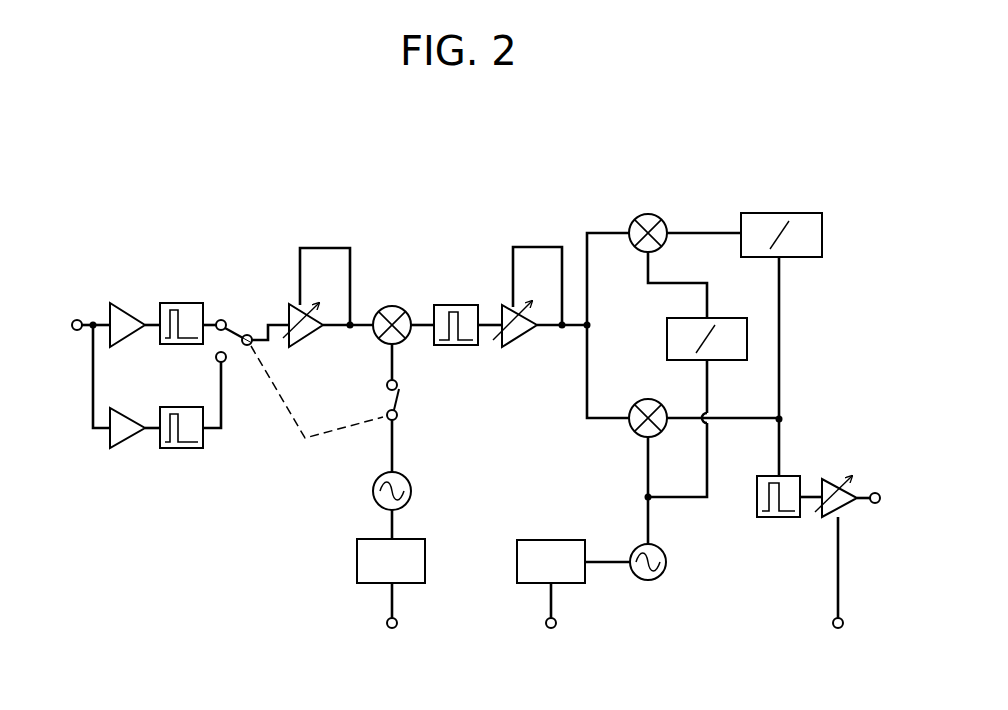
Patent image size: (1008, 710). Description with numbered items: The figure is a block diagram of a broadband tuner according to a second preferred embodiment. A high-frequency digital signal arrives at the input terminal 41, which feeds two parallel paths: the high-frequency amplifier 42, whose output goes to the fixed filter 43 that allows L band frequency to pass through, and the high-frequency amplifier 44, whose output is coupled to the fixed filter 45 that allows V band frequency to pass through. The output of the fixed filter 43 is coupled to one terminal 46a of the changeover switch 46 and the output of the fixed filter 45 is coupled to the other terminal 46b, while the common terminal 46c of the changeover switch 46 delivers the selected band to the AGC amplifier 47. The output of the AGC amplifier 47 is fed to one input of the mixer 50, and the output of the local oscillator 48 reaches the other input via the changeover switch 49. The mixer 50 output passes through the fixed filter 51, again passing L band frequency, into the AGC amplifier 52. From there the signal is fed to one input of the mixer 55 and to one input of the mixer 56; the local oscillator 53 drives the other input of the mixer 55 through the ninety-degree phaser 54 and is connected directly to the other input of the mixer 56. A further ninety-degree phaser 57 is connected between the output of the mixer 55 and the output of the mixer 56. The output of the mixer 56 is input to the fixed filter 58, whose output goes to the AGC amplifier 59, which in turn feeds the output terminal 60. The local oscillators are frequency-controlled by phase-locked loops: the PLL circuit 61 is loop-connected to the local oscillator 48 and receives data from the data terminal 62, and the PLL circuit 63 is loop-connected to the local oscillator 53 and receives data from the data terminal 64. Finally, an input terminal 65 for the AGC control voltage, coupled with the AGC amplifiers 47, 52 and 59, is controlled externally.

The input terminal 41 is at (73, 320).
The high-frequency amplifier 42 is at (130, 443).
The fixed filter 43 is at (197, 448).
The high-frequency amplifier 44 is at (127, 302).
The fixed filter 45 is at (182, 302).
The changeover switch 46 is at (250, 334).
The terminal 46a is at (227, 363).
The terminal 46b is at (227, 320).
The common terminal 46c is at (254, 344).
The AGC amplifier 47 is at (317, 297).
The local oscillator 48 is at (413, 500).
The changeover switch 49 is at (402, 398).
The mixer 50 is at (397, 300).
The fixed filter 51 is at (455, 302).
The AGC amplifier 52 is at (525, 297).
The local oscillator 53 is at (668, 579).
The 90-degree phaser 54 is at (665, 320).
The mixer 55 is at (660, 213).
The mixer 56 is at (630, 437).
The 90-degree phaser 57 is at (795, 213).
The fixed filter 58 is at (772, 473).
The AGC amplifier 59 is at (837, 475).
The output terminal 60 is at (880, 490).
The PLL circuit 61 is at (373, 538).
The data terminal 62 is at (397, 625).
The PLL circuit 63 is at (550, 538).
The data terminal 64 is at (557, 627).
The input terminal of AGC control voltage 65 is at (847, 617).